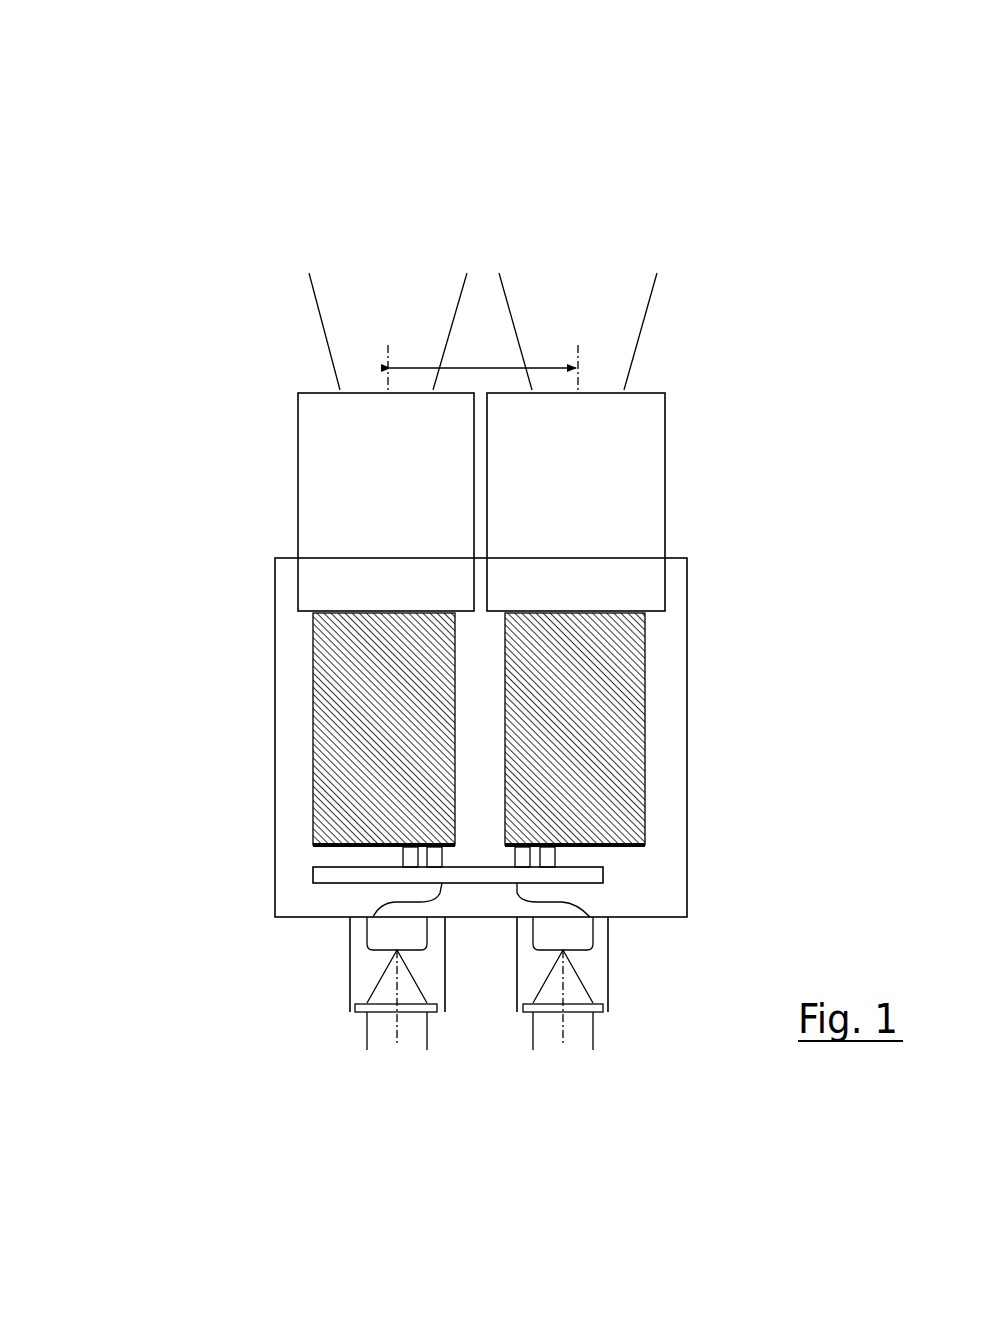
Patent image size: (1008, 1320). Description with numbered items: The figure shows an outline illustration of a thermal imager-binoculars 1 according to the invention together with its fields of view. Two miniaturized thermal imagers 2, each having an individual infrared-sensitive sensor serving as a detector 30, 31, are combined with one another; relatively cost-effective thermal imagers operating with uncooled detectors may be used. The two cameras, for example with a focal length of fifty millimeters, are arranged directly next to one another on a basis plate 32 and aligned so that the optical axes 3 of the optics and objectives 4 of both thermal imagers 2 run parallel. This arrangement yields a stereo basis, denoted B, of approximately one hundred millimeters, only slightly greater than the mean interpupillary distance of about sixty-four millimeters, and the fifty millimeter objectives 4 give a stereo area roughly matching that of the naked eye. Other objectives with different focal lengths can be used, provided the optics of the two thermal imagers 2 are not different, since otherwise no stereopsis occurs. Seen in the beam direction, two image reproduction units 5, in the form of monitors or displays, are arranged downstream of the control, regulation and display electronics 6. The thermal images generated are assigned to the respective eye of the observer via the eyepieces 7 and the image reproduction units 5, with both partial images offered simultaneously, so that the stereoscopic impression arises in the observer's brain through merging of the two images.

The thermal imager-binoculars 1 is at (692, 166).
The thermal imagers 2 is at (307, 657).
The optical axes 3 is at (383, 358).
The objectives 4 is at (330, 472).
The image reproduction units 5 is at (375, 932).
The control, regulation and display electronics 6 is at (330, 877).
The eyepieces 7 is at (577, 1008).
The detector 30 is at (310, 845).
The detector 31 is at (647, 844).
The basis plate 32 is at (292, 745).